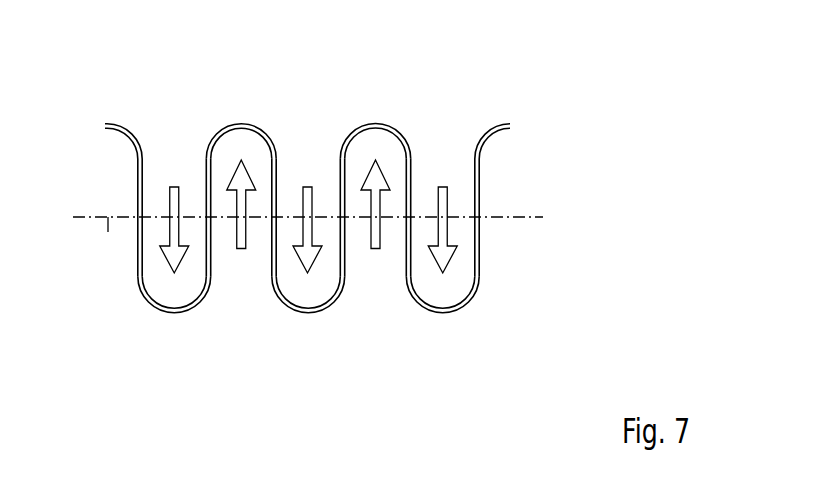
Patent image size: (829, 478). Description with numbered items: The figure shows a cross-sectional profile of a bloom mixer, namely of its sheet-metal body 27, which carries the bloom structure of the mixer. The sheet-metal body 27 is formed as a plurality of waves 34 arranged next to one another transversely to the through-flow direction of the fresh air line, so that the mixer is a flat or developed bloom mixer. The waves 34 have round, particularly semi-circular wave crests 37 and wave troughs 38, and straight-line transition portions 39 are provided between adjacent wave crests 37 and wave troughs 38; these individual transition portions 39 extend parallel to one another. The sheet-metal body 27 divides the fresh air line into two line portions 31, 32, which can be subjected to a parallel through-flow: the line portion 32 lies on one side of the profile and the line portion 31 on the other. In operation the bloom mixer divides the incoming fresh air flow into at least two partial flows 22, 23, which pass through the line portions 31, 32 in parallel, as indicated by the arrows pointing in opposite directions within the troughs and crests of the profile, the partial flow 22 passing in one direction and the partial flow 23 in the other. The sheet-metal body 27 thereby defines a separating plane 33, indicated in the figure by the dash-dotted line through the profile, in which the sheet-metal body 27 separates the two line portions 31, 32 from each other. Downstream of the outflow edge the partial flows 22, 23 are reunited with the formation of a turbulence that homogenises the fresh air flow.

The partial flow 22 is at (242, 249).
The partial flow 23 is at (173, 187).
The sheet-metal body 27 is at (379, 118).
The line portion 31 is at (323, 375).
The line portion 32 is at (322, 104).
The separating plane 33 is at (107, 240).
The waves 34 is at (222, 132).
The wave crests 37 is at (230, 122).
The wave troughs 38 is at (173, 314).
The transition portions 39 is at (409, 217).